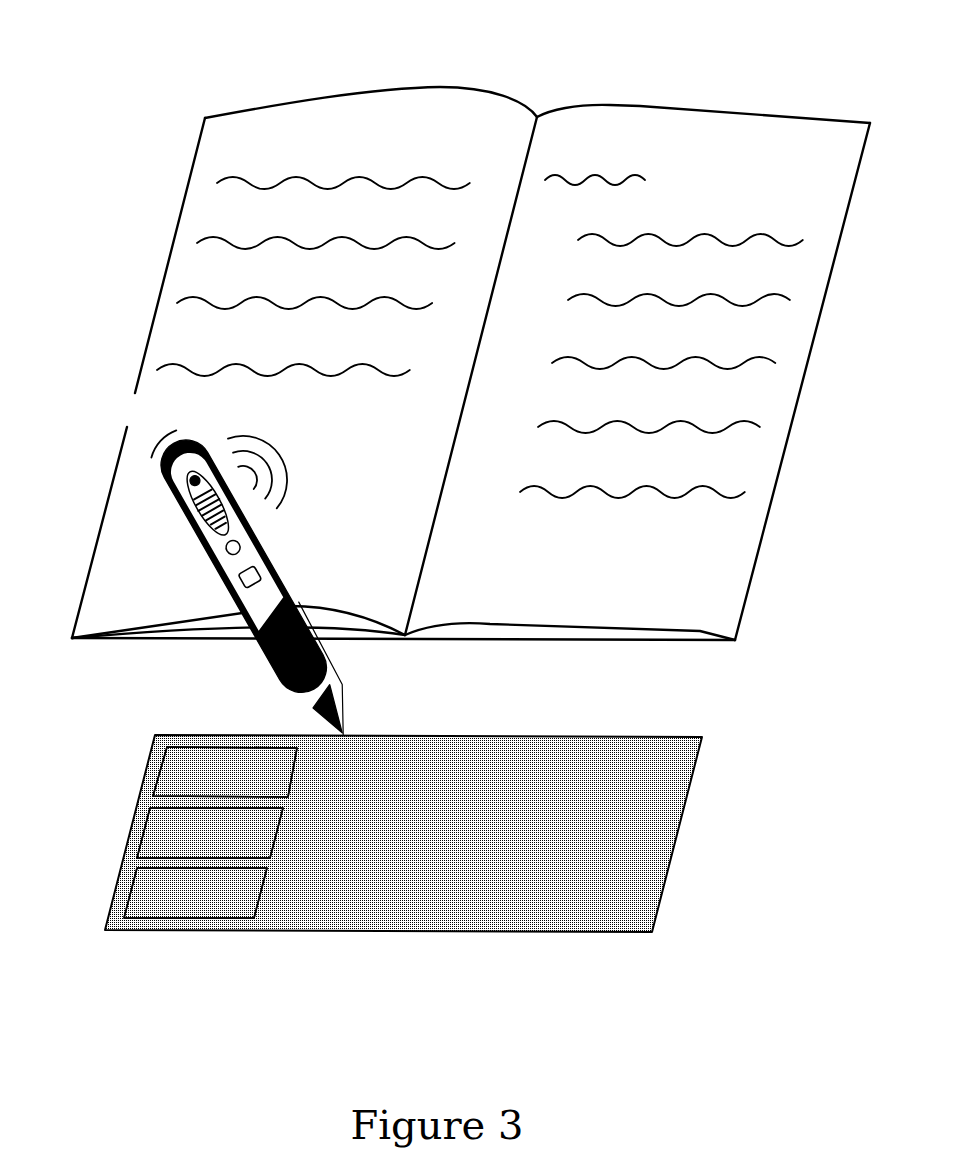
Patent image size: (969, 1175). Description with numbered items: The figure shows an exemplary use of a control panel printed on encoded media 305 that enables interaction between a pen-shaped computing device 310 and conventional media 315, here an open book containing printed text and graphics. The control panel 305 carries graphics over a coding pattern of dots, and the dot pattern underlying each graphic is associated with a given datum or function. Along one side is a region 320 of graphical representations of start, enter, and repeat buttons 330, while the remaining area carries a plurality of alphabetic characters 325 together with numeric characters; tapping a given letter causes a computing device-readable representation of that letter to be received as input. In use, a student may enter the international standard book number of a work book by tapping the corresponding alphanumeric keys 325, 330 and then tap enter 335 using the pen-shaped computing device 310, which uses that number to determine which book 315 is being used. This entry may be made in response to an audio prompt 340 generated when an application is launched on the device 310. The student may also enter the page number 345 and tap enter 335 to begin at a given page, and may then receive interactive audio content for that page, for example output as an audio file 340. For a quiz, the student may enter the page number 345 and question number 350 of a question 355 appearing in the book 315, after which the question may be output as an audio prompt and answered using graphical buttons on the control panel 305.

The control panel printed on encoded media 305 is at (680, 833).
The pen-shaped computing device 310 is at (192, 542).
The conventional media 315 is at (670, 107).
The control button region 320 is at (120, 946).
The alphabetic characters 325 is at (487, 946).
The buttons 330 is at (527, 946).
The enter 335 is at (137, 812).
The audio prompt 340 is at (290, 472).
The page number 345 is at (713, 619).
The question number 350 is at (535, 303).
The question 355 is at (672, 312).